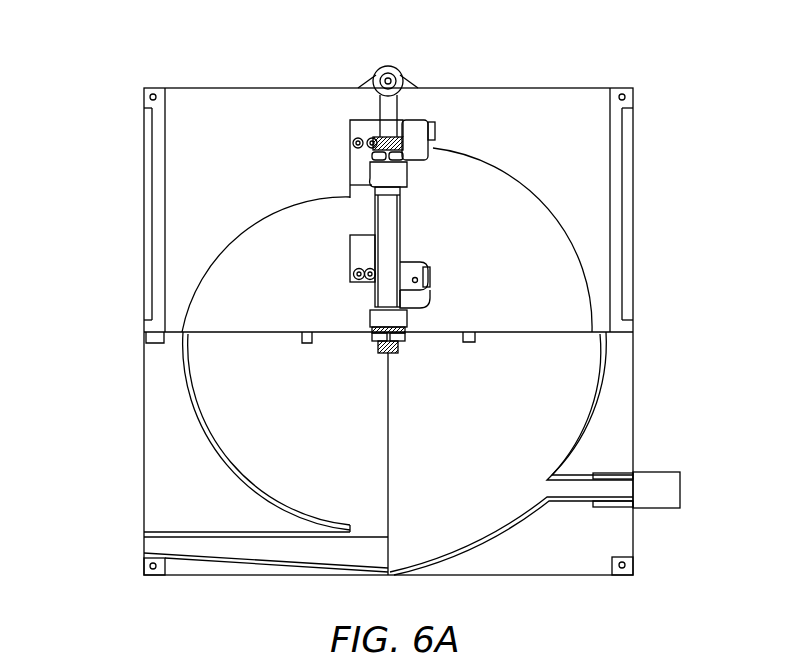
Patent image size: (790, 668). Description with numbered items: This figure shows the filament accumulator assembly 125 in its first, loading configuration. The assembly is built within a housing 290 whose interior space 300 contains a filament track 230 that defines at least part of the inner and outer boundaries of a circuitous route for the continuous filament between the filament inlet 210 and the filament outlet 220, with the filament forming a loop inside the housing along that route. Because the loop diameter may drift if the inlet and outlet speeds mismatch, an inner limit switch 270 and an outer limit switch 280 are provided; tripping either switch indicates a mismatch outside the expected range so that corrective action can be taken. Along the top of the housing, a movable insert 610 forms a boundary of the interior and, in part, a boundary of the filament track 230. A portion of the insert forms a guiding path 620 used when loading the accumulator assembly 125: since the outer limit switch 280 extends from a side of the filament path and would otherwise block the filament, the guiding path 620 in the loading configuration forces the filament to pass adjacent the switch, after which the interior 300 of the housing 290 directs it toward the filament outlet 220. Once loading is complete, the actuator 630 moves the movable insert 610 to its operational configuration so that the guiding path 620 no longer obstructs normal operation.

The filament accumulator assembly 125 is at (100, 58).
The movable insert 610 is at (215, 107).
The outer limit switch 280 is at (428, 161).
The actuator 630 is at (400, 217).
The housing 290 is at (633, 183).
The inner limit switch 270 is at (420, 262).
The filament track 230 is at (520, 310).
The interior space 300 is at (588, 412).
The filament inlet 210 is at (660, 508).
The guiding path 620 is at (212, 262).
The filament outlet 220 is at (144, 549).